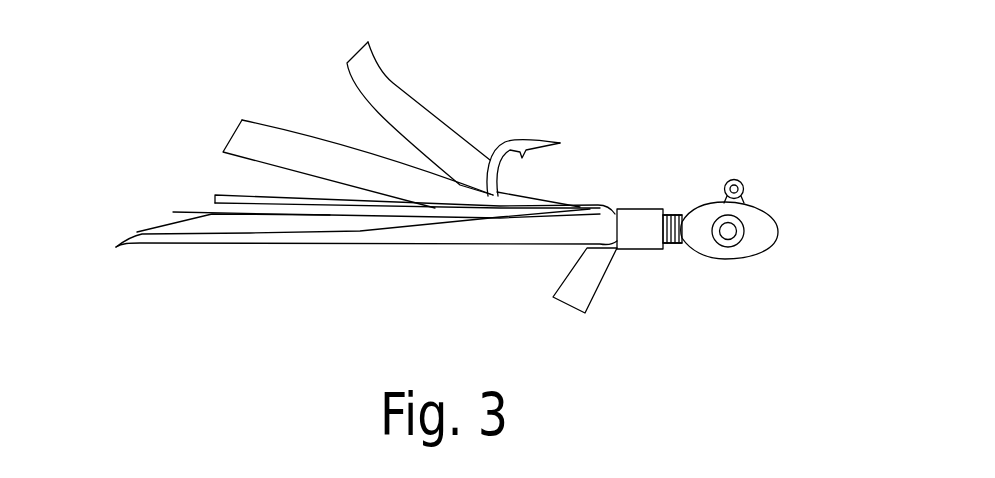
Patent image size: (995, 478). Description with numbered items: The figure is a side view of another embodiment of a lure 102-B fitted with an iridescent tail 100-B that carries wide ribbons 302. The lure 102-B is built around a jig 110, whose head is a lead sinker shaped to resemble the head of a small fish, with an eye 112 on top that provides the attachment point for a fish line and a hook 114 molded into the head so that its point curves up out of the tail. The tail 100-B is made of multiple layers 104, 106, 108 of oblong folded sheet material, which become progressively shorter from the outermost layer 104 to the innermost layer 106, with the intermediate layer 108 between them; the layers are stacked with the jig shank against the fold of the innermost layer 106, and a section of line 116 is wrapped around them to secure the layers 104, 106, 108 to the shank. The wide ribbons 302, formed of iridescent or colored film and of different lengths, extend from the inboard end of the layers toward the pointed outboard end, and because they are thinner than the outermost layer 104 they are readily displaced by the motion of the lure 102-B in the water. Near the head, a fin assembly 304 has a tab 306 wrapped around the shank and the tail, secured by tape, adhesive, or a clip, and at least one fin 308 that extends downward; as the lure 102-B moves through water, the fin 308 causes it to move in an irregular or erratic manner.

The iridescent tail 100-B is at (84, 285).
The lure 102-B is at (745, 65).
The outermost layer 104 is at (343, 243).
The innermost layer 106 is at (208, 203).
The layer 108 is at (160, 223).
The jig 110 is at (715, 201).
The eye 112 is at (738, 180).
The hook 114 is at (507, 140).
The wide ribbons 302 is at (278, 125).
The fin assembly 304 is at (630, 208).
The tab 306 is at (645, 250).
The fin 308 is at (570, 272).
The line 116 is at (670, 244).